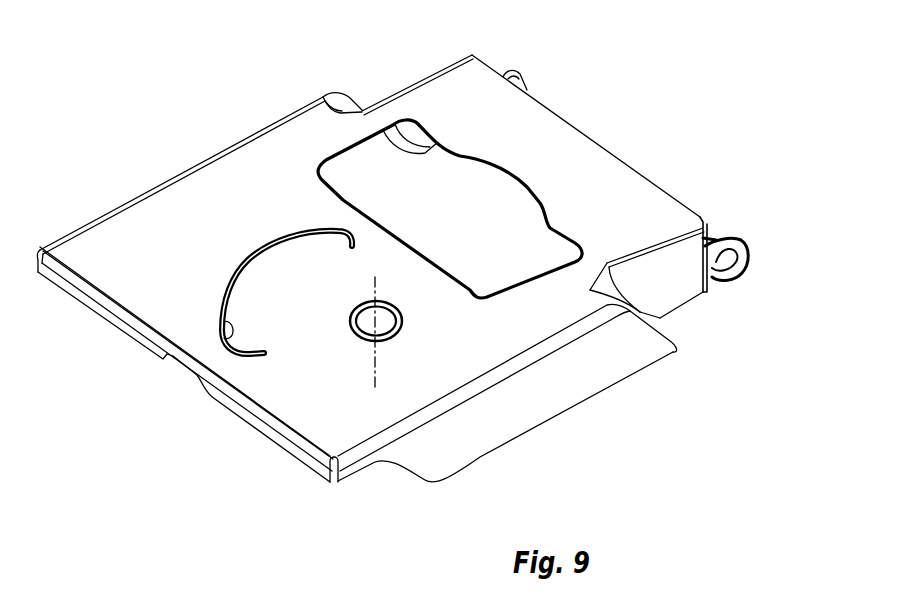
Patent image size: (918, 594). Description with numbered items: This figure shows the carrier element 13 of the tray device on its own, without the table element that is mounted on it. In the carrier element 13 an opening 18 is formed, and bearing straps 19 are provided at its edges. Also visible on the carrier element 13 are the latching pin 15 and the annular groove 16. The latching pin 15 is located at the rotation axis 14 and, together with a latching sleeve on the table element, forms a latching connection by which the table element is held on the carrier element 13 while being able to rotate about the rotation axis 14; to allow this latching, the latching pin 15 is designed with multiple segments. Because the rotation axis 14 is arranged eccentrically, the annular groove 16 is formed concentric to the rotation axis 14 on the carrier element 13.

The carrier element 13 is at (129, 55).
The rotation axis 14 is at (372, 388).
The latching pin 15 is at (403, 326).
The annular groove 16 is at (222, 290).
The opening 18 is at (489, 216).
The bearing straps 19 is at (730, 237).